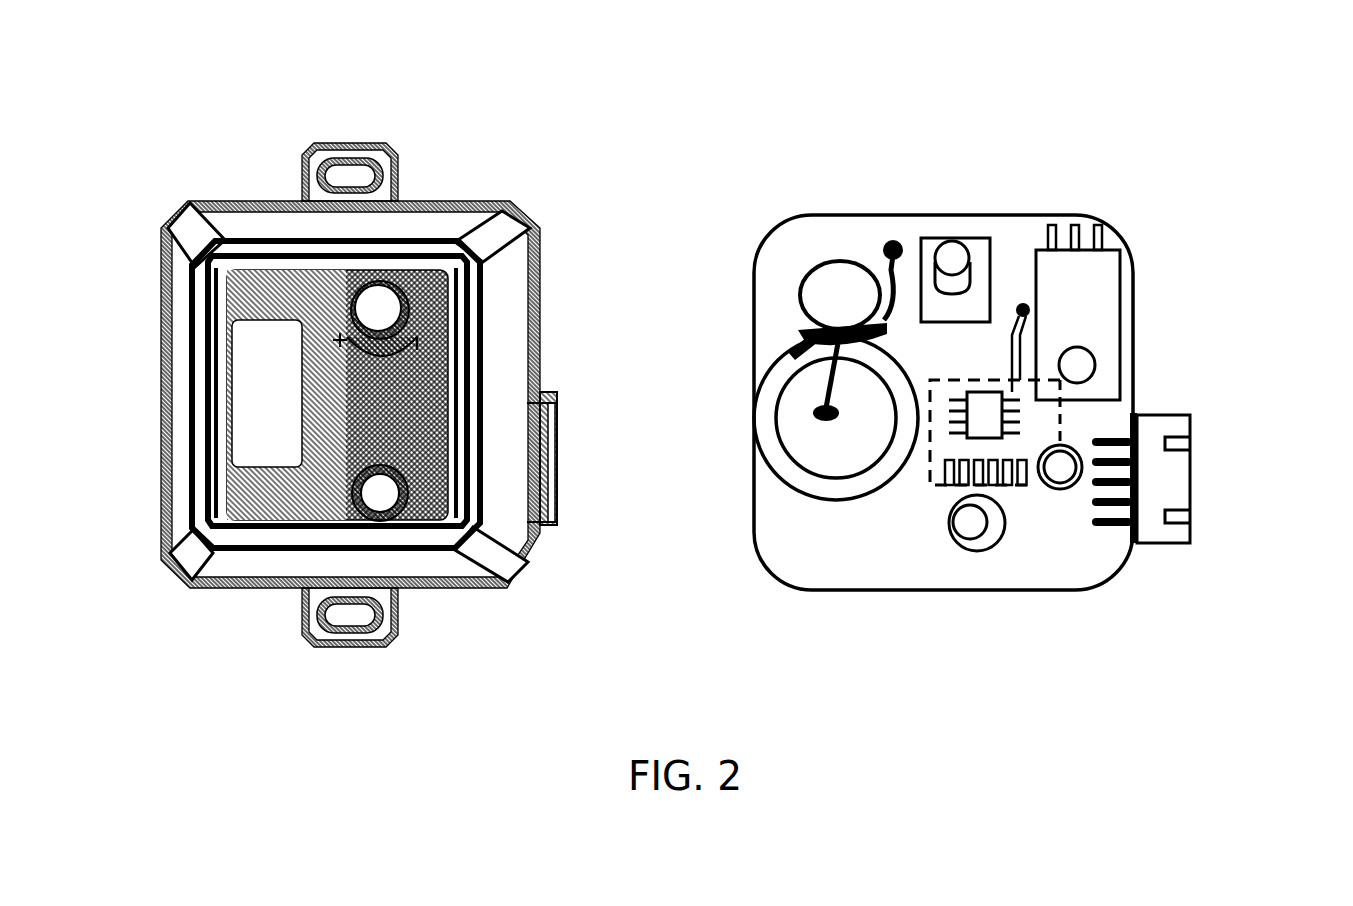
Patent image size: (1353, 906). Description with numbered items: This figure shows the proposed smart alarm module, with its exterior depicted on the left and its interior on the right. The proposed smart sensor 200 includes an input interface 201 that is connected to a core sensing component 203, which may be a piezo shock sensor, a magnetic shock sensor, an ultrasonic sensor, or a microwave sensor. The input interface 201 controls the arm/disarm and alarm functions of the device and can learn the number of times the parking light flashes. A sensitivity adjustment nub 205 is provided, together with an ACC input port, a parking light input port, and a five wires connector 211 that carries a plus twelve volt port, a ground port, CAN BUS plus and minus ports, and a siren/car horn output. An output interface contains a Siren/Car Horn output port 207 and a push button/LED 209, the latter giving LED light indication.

The smart sensor 200 is at (688, 65).
The input interface 201 is at (1068, 428).
The core sensing component 203 is at (849, 438).
The sensitivity adjustment nub 205 is at (380, 308).
The Siren/Car Horn output port 207 is at (1095, 285).
The push button/LED 209 is at (380, 497).
The five wires connector 211 is at (557, 420).